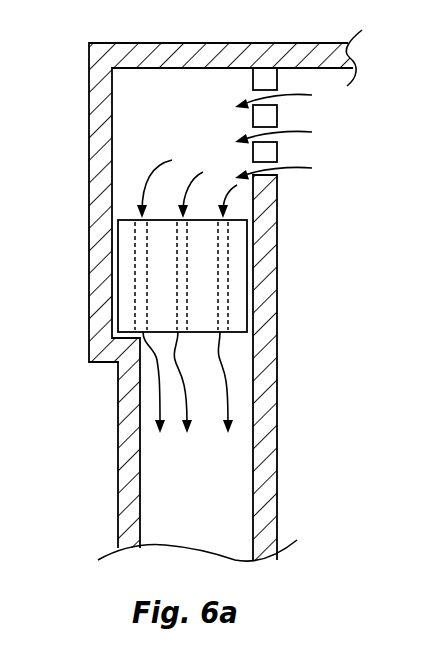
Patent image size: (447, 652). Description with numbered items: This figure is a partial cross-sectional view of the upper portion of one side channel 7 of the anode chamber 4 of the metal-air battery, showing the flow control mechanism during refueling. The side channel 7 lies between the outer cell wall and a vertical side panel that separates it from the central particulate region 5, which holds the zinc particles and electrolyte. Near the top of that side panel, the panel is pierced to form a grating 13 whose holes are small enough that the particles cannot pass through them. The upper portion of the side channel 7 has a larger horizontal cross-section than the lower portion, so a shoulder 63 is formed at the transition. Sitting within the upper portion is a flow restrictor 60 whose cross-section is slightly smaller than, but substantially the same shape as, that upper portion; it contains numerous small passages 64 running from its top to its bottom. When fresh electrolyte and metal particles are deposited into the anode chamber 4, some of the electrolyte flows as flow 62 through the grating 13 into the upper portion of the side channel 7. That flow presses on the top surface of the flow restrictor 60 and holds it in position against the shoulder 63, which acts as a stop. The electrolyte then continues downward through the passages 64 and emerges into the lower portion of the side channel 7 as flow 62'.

The anode chamber 4 is at (50, 249).
The central particulate region 5 is at (365, 182).
The side channel 7 is at (221, 494).
The grating 13 is at (277, 115).
The flow restrictor 60 is at (230, 276).
The electrolyte flow 62 is at (124, 148).
The electrolyte flow into lower side channel 62' is at (141, 420).
The shoulder 63 is at (88, 343).
The passages 64 is at (227, 308).